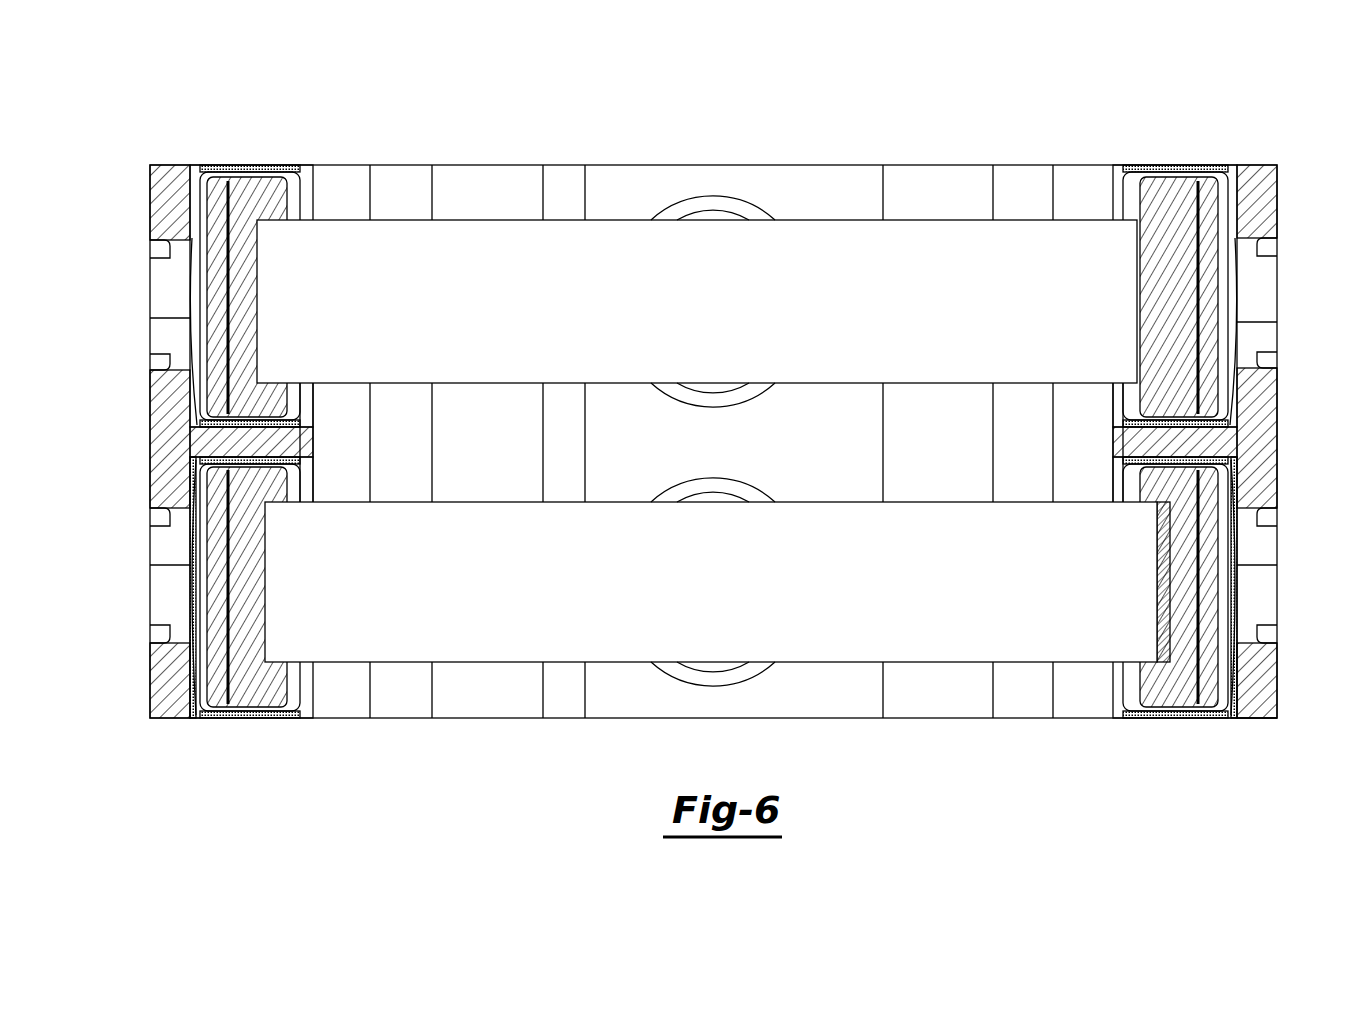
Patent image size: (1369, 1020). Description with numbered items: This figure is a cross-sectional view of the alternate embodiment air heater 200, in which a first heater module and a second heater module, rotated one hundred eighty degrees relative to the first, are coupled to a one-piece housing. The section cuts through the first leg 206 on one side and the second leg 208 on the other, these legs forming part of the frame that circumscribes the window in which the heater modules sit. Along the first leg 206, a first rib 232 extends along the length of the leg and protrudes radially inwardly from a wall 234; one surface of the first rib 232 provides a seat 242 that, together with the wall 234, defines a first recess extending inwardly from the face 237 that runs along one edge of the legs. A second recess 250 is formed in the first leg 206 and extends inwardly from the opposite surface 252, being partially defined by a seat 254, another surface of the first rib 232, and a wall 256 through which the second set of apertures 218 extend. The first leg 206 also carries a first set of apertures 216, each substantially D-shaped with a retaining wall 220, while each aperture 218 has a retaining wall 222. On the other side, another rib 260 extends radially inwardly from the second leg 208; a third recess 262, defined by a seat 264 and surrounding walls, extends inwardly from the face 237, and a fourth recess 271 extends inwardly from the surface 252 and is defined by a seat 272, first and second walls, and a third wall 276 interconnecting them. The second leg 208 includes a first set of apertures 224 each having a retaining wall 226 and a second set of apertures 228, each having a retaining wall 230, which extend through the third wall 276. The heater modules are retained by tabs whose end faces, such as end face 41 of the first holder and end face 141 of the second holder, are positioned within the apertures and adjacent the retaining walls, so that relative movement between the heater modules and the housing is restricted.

The air heater 200 is at (882, 72).
The third recess 262 is at (272, 265).
The fourth recess 271 is at (254, 619).
The second recess 250 is at (1194, 628).
The face 237 is at (1250, 165).
The wall 234 is at (1230, 205).
The end face 41 is at (1272, 230).
The end face 141 is at (192, 240).
The first leg 206 is at (1283, 722).
The second leg 208 is at (175, 455).
The first rib 232 is at (1118, 447).
The first set of apertures 216 is at (1268, 362).
The second set of apertures 218 is at (1265, 515).
The retaining wall 220 is at (1268, 248).
The retaining wall 222 is at (1262, 640).
The first set of apertures 224 is at (160, 362).
The retaining wall 226 is at (162, 252).
The second set of apertures 228 is at (160, 517).
The retaining wall 230 is at (160, 630).
The seat 242 is at (1138, 418).
The surface 252 is at (1252, 722).
The seat 254 is at (1122, 505).
The wall 256 is at (1240, 528).
The rib 260 is at (313, 446).
The seat 264 is at (300, 420).
The seat 272 is at (310, 462).
The third wall 276 is at (200, 718).